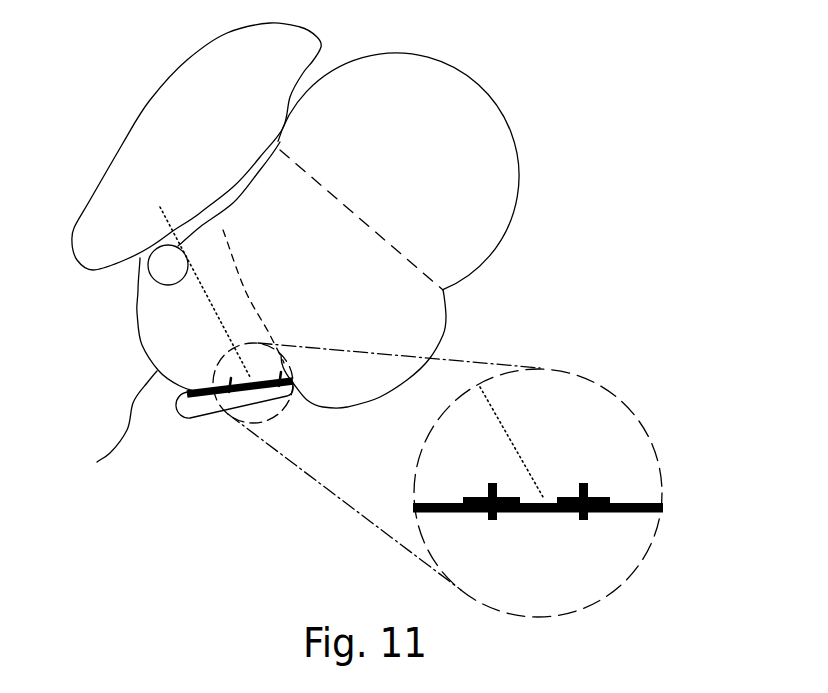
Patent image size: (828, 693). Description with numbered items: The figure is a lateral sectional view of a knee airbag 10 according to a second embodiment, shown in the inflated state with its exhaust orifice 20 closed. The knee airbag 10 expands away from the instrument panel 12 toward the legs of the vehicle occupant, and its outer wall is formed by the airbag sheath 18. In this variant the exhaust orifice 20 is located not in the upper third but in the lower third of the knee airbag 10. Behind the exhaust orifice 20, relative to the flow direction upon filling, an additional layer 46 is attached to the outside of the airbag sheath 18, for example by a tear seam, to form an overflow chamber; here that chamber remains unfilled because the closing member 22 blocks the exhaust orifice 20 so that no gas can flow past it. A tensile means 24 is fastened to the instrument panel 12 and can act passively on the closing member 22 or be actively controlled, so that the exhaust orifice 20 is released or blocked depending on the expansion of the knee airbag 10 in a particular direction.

The knee airbag 10 is at (523, 72).
The instrument panel 12 is at (170, 117).
The airbag sheath 18 is at (633, 509).
The exhaust orifice 20 is at (520, 505).
The closing member 22 is at (563, 497).
The tensile means 24 is at (204, 290).
The additional layer 46 is at (181, 409).